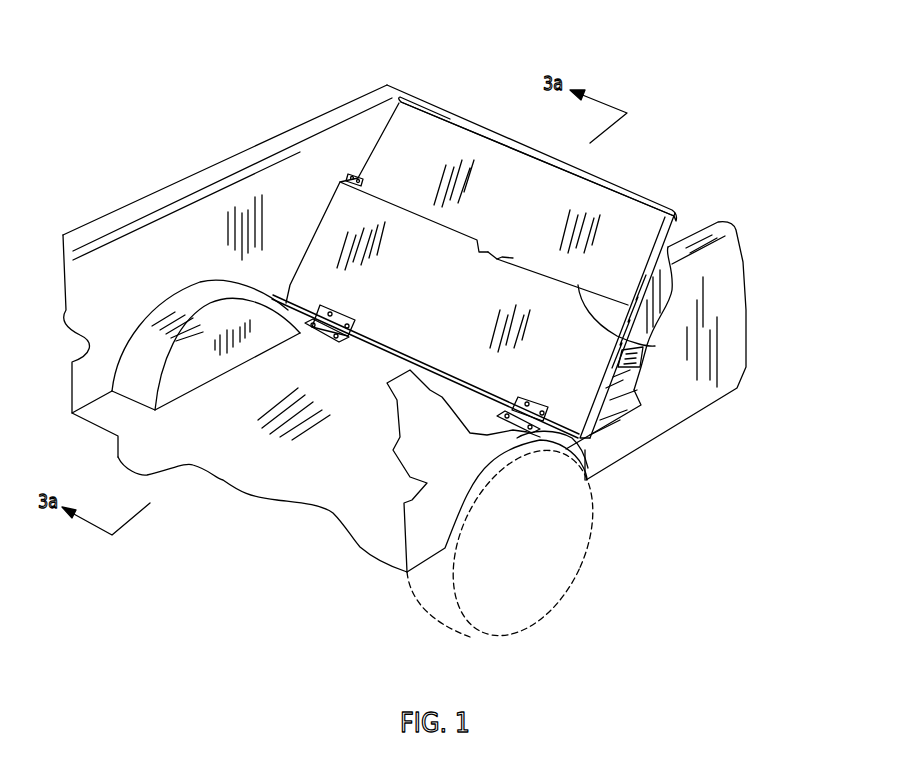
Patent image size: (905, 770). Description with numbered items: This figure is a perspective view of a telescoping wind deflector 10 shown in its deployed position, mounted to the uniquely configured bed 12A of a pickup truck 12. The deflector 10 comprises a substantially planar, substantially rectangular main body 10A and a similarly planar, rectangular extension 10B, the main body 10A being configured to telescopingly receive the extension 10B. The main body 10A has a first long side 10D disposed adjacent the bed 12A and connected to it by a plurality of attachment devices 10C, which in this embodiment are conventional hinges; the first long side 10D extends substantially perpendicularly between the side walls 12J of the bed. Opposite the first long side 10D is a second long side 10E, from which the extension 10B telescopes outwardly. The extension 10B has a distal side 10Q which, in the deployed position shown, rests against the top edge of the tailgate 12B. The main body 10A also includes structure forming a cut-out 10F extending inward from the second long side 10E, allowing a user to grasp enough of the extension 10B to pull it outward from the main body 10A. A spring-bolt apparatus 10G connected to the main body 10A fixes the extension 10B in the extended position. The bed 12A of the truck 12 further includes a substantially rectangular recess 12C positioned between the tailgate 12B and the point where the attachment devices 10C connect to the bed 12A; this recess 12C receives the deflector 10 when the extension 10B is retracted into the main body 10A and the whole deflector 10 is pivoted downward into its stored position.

The telescoping wind deflector 10 is at (627, 160).
The main body 10A is at (560, 383).
The extension 10B is at (622, 225).
The attachment devices 10C is at (326, 330).
The first long side 10D is at (305, 310).
The second long side 10E is at (655, 346).
The cut-out 10F is at (488, 258).
The spring-bolt apparatus 10G is at (352, 176).
The distal side 10Q is at (433, 100).
The pickup truck 12 is at (757, 387).
The bed 12A is at (303, 473).
The tailgate 12B is at (690, 223).
The recess 12C is at (603, 370).
The side walls 12J is at (167, 255).